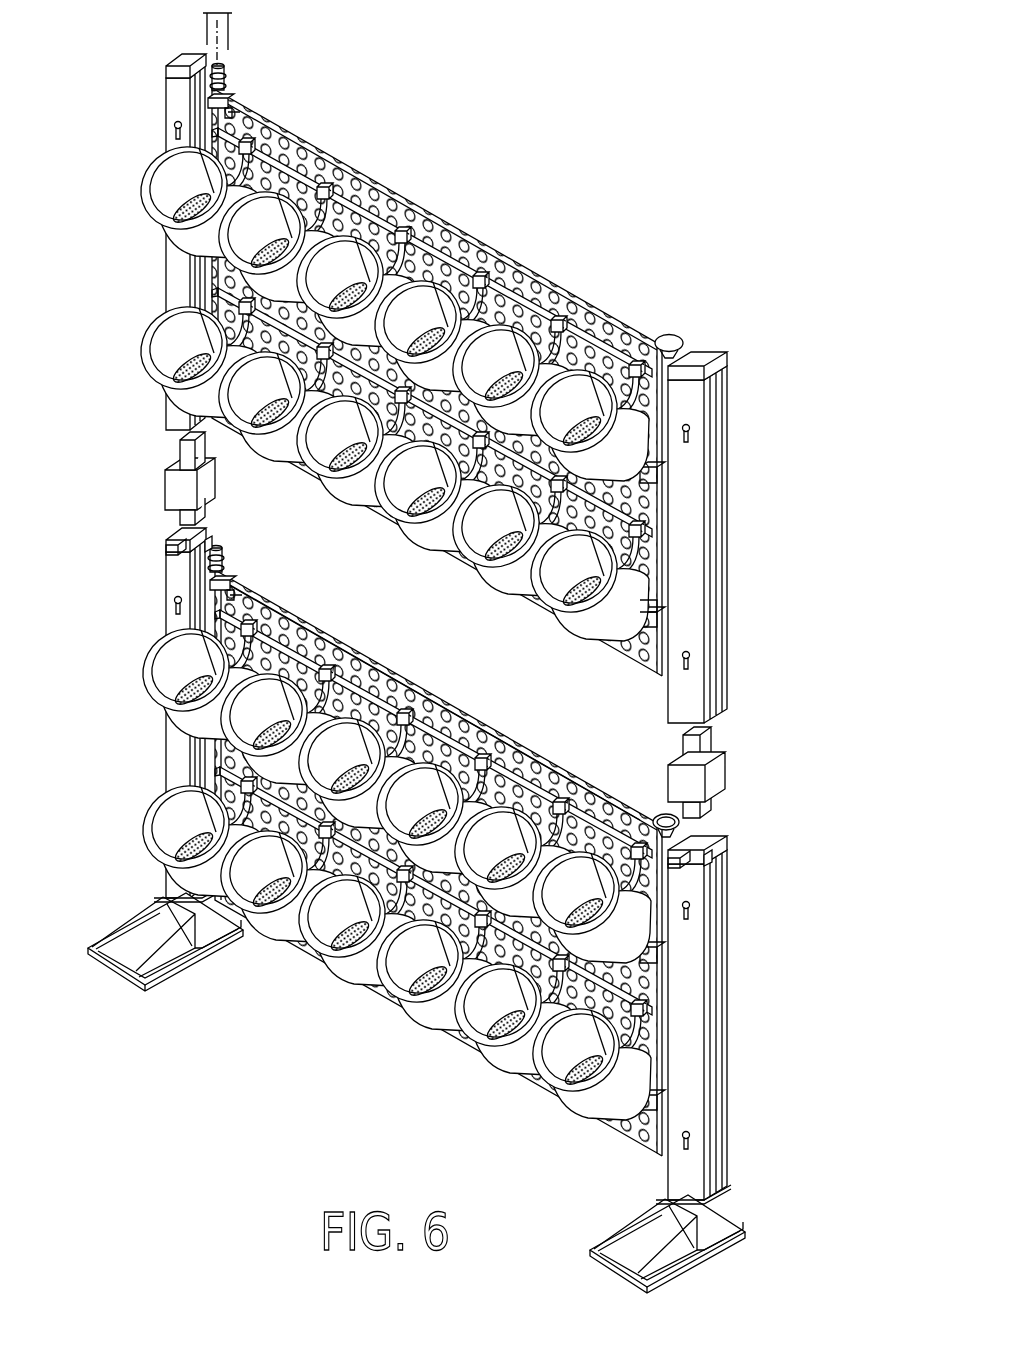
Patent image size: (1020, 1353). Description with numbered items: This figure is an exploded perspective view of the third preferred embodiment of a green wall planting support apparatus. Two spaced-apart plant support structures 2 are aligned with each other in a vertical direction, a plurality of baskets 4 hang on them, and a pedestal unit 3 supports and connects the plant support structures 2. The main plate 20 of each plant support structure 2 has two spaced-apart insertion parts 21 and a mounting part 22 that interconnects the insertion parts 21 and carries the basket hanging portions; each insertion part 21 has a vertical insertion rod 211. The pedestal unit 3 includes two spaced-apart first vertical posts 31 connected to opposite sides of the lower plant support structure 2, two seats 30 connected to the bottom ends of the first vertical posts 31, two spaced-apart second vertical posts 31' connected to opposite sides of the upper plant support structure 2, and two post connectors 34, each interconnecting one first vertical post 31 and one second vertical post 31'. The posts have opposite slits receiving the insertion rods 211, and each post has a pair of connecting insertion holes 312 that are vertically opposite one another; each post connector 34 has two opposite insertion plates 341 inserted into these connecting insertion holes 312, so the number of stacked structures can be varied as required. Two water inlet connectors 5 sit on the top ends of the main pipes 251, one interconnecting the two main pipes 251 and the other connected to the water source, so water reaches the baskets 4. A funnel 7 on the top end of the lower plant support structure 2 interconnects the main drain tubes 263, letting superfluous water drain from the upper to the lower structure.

The plant support structure 2 is at (520, 225).
The main plate 20 is at (445, 680).
The mounting part 22 is at (480, 660).
The insertion part 21 is at (235, 95).
The main pipe 251 is at (240, 112).
The main drain tube 263 is at (665, 612).
The vertical insertion rod 211 is at (208, 545).
The pedestal unit 3 is at (454, 867).
The seat 30 is at (170, 968).
The first vertical post 31 is at (450, 864).
The second vertical post 31' is at (451, 388).
The connecting insertion hole 312 is at (190, 560).
The post connector 34 is at (452, 647).
The insertion plate 341 is at (700, 748).
The basket 4 is at (415, 1020).
The water inlet connector 5 is at (226, 86).
The funnel 7 is at (664, 830).